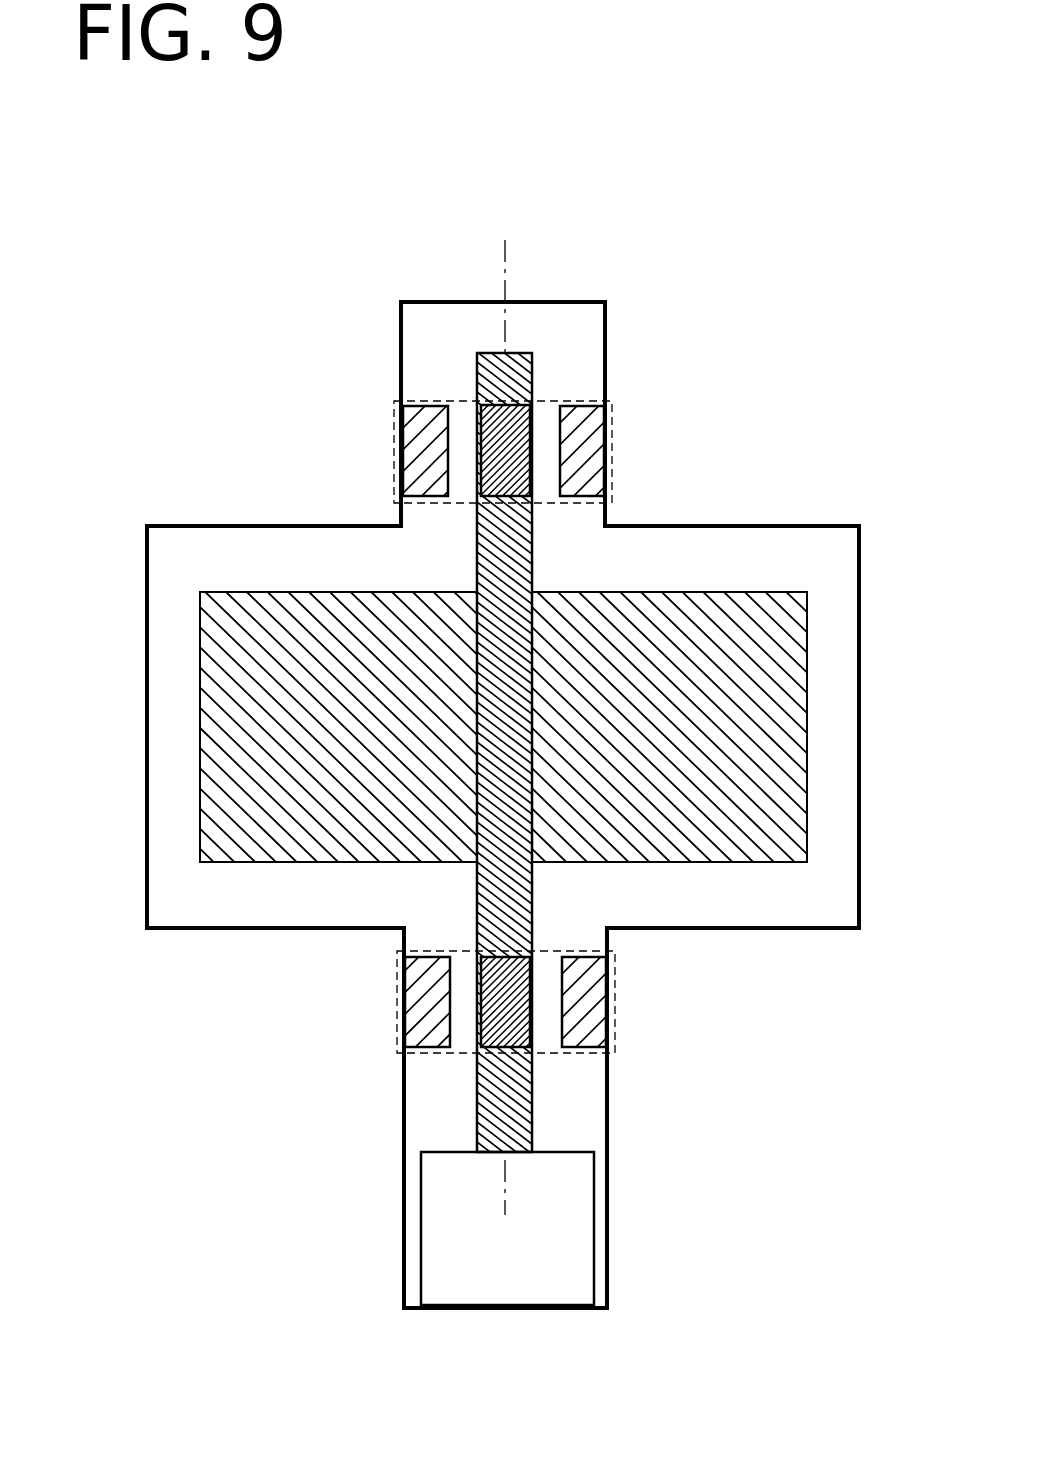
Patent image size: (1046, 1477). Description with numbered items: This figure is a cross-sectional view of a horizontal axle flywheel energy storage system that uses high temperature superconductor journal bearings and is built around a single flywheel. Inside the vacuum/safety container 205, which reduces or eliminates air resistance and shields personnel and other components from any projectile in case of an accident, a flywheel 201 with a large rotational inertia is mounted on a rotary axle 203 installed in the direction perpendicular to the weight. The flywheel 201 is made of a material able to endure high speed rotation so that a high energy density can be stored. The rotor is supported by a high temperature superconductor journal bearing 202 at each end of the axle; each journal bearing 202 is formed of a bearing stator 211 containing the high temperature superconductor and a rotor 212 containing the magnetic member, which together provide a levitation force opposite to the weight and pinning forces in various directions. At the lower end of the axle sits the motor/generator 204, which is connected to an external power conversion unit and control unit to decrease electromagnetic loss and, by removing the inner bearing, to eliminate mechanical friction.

The flywheel 201 is at (727, 606).
The high temperature superconductor journal bearing 202 is at (395, 439).
The rotary axle 203 is at (523, 353).
The motor/generator 204 is at (583, 1188).
The vacuum/safety container 205 is at (743, 929).
The bearing stator 211 is at (420, 989).
The rotor 212 is at (527, 1045).